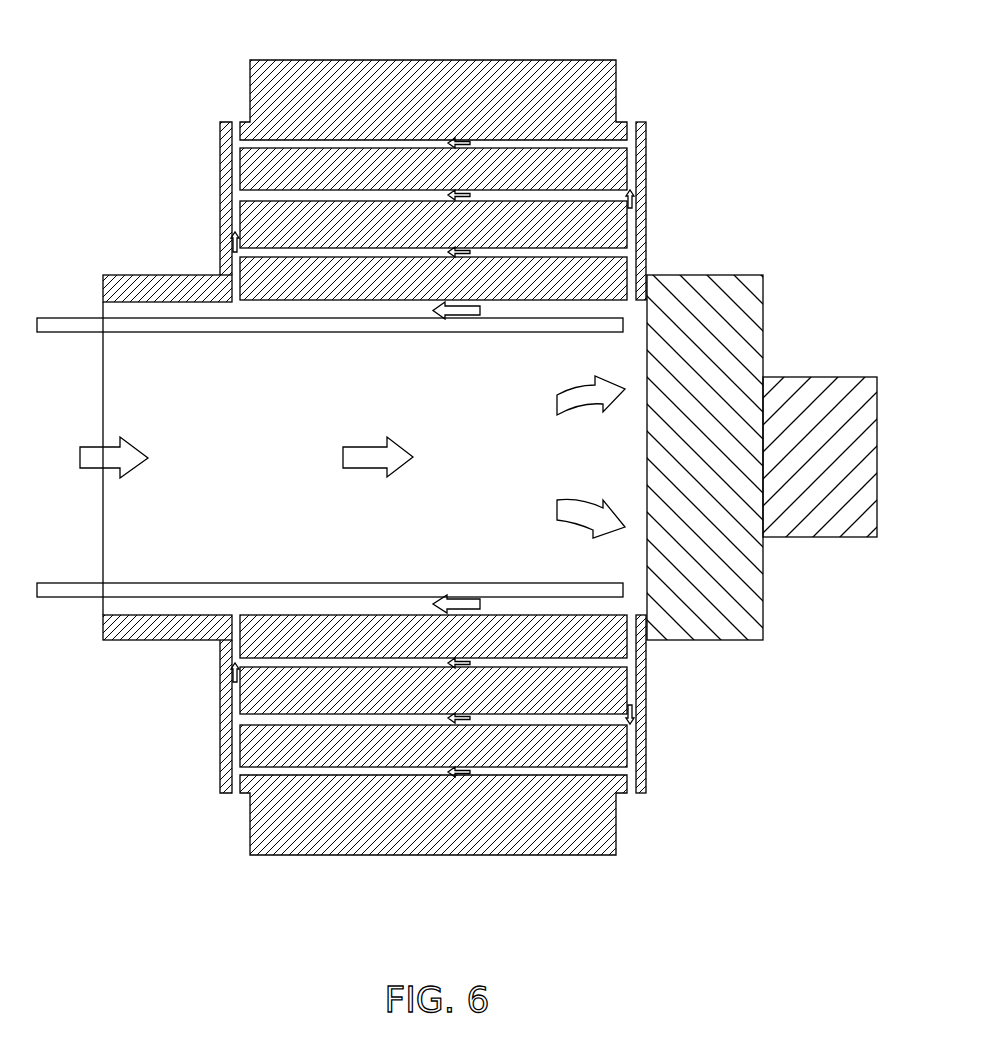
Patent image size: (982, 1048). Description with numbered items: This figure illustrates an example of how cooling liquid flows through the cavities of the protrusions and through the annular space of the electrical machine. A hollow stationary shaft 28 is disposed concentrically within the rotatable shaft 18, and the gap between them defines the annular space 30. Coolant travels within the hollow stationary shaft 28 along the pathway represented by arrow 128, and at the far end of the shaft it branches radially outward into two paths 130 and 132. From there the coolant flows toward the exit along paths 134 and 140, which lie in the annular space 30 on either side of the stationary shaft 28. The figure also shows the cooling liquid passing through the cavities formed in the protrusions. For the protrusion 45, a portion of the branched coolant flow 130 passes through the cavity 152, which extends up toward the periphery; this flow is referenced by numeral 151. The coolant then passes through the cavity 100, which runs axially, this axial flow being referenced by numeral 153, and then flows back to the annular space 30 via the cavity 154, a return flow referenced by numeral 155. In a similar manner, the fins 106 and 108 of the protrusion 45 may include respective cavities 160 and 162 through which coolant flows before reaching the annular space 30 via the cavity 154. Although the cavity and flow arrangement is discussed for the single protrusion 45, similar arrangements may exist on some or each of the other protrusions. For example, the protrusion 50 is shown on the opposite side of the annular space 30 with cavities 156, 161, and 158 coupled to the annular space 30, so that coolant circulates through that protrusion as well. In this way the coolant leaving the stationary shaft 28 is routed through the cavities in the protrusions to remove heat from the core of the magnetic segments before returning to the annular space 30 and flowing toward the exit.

The rotatable shaft 18 is at (128, 630).
The stationary shaft 28 is at (53, 325).
The annular space 30 is at (327, 604).
The protrusion 45 is at (655, 128).
The protrusion 50 is at (636, 795).
The cavity 100 is at (597, 140).
The fin 106 is at (612, 188).
The fin 108 is at (622, 245).
The coolant flow arrow 128 is at (358, 462).
The branched coolant path 130 is at (573, 407).
The branched coolant path 132 is at (573, 519).
The coolant exit path 134 is at (456, 310).
The coolant exit path 140 is at (460, 603).
The coolant flow through cavity 152 151 is at (648, 203).
The cavity 152 is at (640, 231).
The coolant flow through cavity 100 153 is at (460, 140).
The cavity 154 is at (233, 160).
The coolant flow through cavity 154 155 is at (233, 241).
The cavity 156 is at (640, 742).
The cavity 158 is at (233, 730).
The cavity 160 is at (260, 197).
The cavity 161 is at (255, 808).
The cavity 162 is at (322, 258).